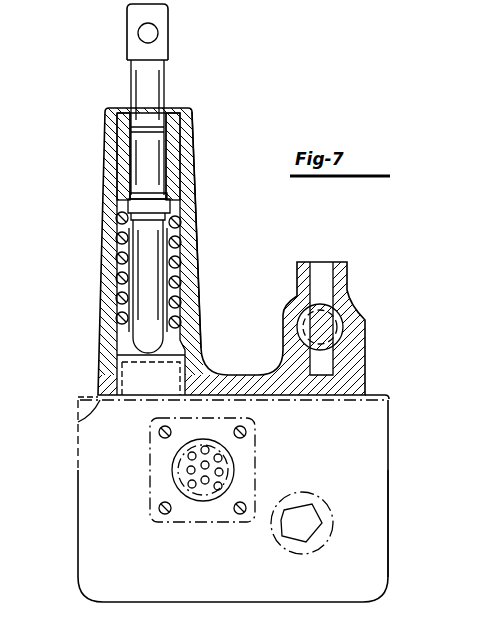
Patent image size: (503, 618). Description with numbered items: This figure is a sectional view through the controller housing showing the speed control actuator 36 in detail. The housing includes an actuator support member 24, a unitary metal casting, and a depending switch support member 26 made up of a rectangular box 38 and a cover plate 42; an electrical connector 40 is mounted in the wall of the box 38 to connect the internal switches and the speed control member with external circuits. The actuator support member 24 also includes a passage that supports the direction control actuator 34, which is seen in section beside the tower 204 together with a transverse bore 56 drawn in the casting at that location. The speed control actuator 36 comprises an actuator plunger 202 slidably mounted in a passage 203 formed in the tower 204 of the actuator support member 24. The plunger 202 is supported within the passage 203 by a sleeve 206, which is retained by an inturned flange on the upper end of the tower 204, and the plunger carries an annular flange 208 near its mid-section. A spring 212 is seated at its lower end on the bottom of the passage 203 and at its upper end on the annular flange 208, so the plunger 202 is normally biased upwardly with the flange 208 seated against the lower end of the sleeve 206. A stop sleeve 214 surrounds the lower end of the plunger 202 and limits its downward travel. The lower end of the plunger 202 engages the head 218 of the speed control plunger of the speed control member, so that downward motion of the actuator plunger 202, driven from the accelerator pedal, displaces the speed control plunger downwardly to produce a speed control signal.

The actuator support member 24 is at (210, 301).
The switch support member 26 is at (397, 446).
The direction control actuator 34 is at (365, 311).
The speed control actuator 36 is at (104, 221).
The rectangular box 38 is at (77, 465).
The electrical connector 40 is at (256, 458).
The cover plate 42 is at (78, 422).
The mounting bore 56 is at (343, 335).
The actuator plunger 202 is at (197, 250).
The passage 203 is at (122, 255).
The tower 204 is at (186, 172).
The sleeve 206 is at (190, 135).
The annular flange 208 is at (117, 200).
The spring 212 is at (150, 243).
The stop sleeve 214 is at (118, 290).
The head 218 is at (125, 367).